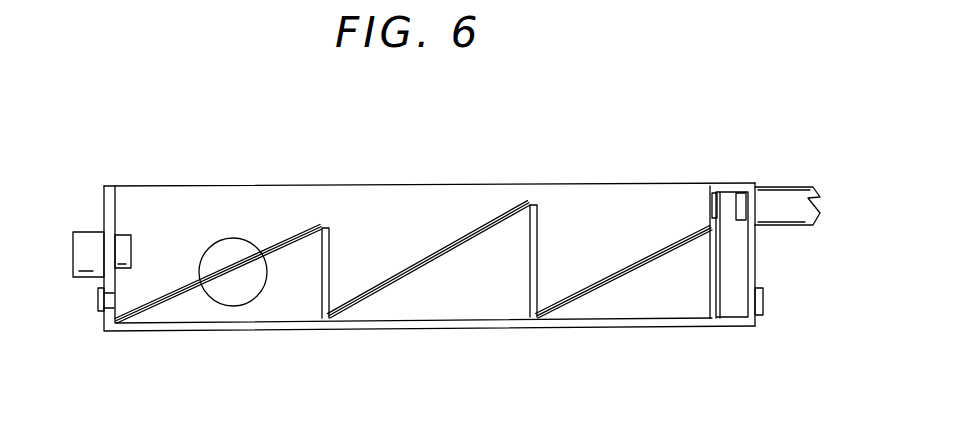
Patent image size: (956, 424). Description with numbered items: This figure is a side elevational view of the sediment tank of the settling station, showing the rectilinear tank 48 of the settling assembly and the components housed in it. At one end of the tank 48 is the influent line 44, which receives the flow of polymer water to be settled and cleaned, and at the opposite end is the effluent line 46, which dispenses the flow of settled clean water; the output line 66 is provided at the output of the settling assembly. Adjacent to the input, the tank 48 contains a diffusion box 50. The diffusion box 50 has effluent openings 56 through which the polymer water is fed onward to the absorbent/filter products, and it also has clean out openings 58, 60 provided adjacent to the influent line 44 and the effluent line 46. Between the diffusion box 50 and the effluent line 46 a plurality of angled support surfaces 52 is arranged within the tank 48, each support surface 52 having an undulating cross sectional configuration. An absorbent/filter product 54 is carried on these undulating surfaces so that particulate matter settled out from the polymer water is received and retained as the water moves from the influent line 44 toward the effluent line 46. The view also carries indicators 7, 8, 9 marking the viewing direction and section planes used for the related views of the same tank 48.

The view direction indicator for FIG. 7 is at (222, 237).
The section line indicator for FIG. 8 is at (563, 163).
The section line indicator for FIG. 9 is at (710, 158).
The influent line 44 is at (740, 218).
The effluent line 46 is at (132, 247).
The rectilinear tank 48 is at (468, 185).
The diffusion box 50 is at (735, 270).
The angled support surfaces 52 is at (175, 298).
The absorbent/filter product 54 is at (415, 265).
The effluent openings 56 is at (717, 213).
The clean out opening 58 is at (763, 303).
The clean out opening 60 is at (100, 310).
The output line 66 is at (85, 273).